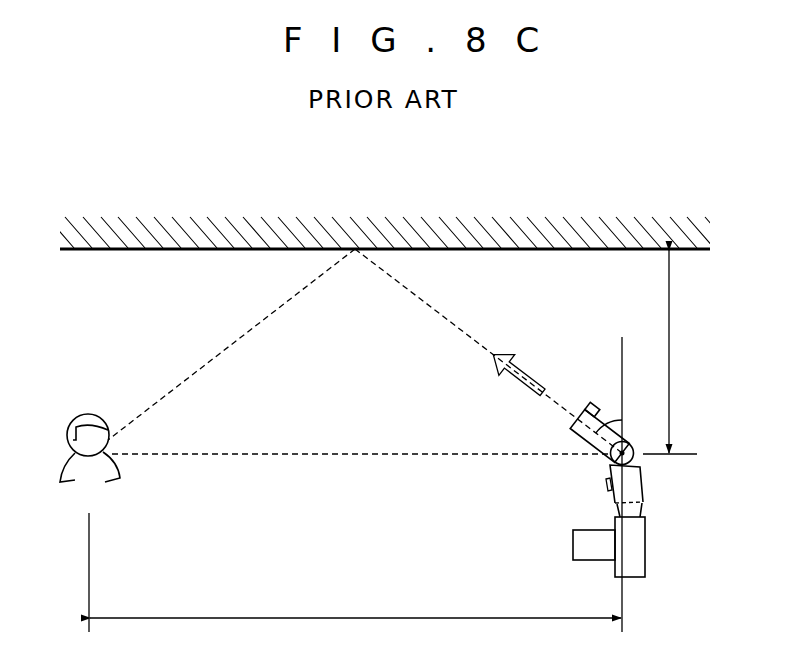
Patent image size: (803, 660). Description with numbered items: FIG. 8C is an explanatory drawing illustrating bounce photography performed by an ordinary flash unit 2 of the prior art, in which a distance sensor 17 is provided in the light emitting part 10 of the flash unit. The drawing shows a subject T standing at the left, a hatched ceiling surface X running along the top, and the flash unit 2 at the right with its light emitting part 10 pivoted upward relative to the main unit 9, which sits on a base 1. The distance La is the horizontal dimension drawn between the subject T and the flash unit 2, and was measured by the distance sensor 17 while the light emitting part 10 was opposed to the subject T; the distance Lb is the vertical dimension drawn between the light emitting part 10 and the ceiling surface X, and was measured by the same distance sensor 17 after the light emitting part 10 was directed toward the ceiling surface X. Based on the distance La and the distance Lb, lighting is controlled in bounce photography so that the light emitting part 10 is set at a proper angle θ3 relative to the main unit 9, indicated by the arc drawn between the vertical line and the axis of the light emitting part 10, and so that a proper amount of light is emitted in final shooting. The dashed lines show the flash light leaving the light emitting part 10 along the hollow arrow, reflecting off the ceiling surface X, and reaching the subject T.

The base unit 1 is at (649, 546).
The flash unit 2 is at (649, 481).
The main unit 9 is at (632, 490).
The light emitting part 10 is at (585, 447).
The distance sensor 17 is at (592, 407).
The angle θ 3 is at (617, 421).
The subject T is at (87, 416).
The ceiling surface X is at (177, 250).
The distance La is at (355, 572).
The distance Lb is at (685, 351).